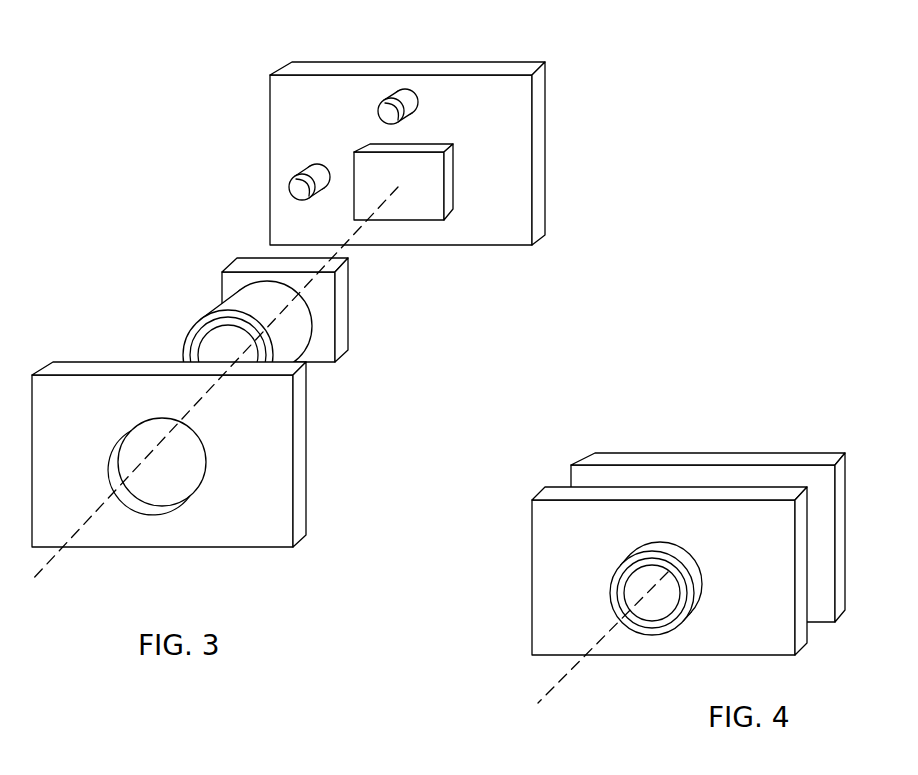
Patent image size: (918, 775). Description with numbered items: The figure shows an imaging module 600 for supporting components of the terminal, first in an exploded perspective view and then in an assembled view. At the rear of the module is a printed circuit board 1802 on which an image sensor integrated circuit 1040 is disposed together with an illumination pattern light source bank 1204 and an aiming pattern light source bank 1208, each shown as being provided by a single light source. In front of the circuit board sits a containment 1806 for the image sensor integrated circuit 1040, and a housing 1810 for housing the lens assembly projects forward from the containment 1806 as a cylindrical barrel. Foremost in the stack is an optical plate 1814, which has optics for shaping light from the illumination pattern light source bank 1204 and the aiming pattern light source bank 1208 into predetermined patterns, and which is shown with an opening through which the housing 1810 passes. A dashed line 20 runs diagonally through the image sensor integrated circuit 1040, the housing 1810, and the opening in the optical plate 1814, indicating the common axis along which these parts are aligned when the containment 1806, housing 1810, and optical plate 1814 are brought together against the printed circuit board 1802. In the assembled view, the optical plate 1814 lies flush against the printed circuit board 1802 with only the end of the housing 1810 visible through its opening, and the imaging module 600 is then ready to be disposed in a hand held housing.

In FIG. 3, the imaging module 600 is at (324, 294).
In FIG. 4, the imaging module 600 is at (664, 514).
In FIG. 3, the printed circuit board 1802 is at (523, 162).
In FIG. 4, the printed circuit board 1802 is at (620, 475).
In FIG. 3, the aiming pattern light source bank 1208 is at (395, 97).
In FIG. 3, the illumination pattern light source bank 1204 is at (313, 173).
In FIG. 3, the image sensor integrated circuit 1040 is at (450, 203).
In FIG. 3, the containment 1806 is at (342, 334).
In FIG. 3, the housing 1810 is at (290, 347).
In FIG. 4, the housing 1810 is at (656, 588).
In FIG. 3, the optical plate 1814 is at (289, 526).
In FIG. 4, the optical plate 1814 is at (560, 510).
In FIG. 3, the optical axis 20 is at (52, 557).
In FIG. 4, the optical axis 20 is at (560, 681).